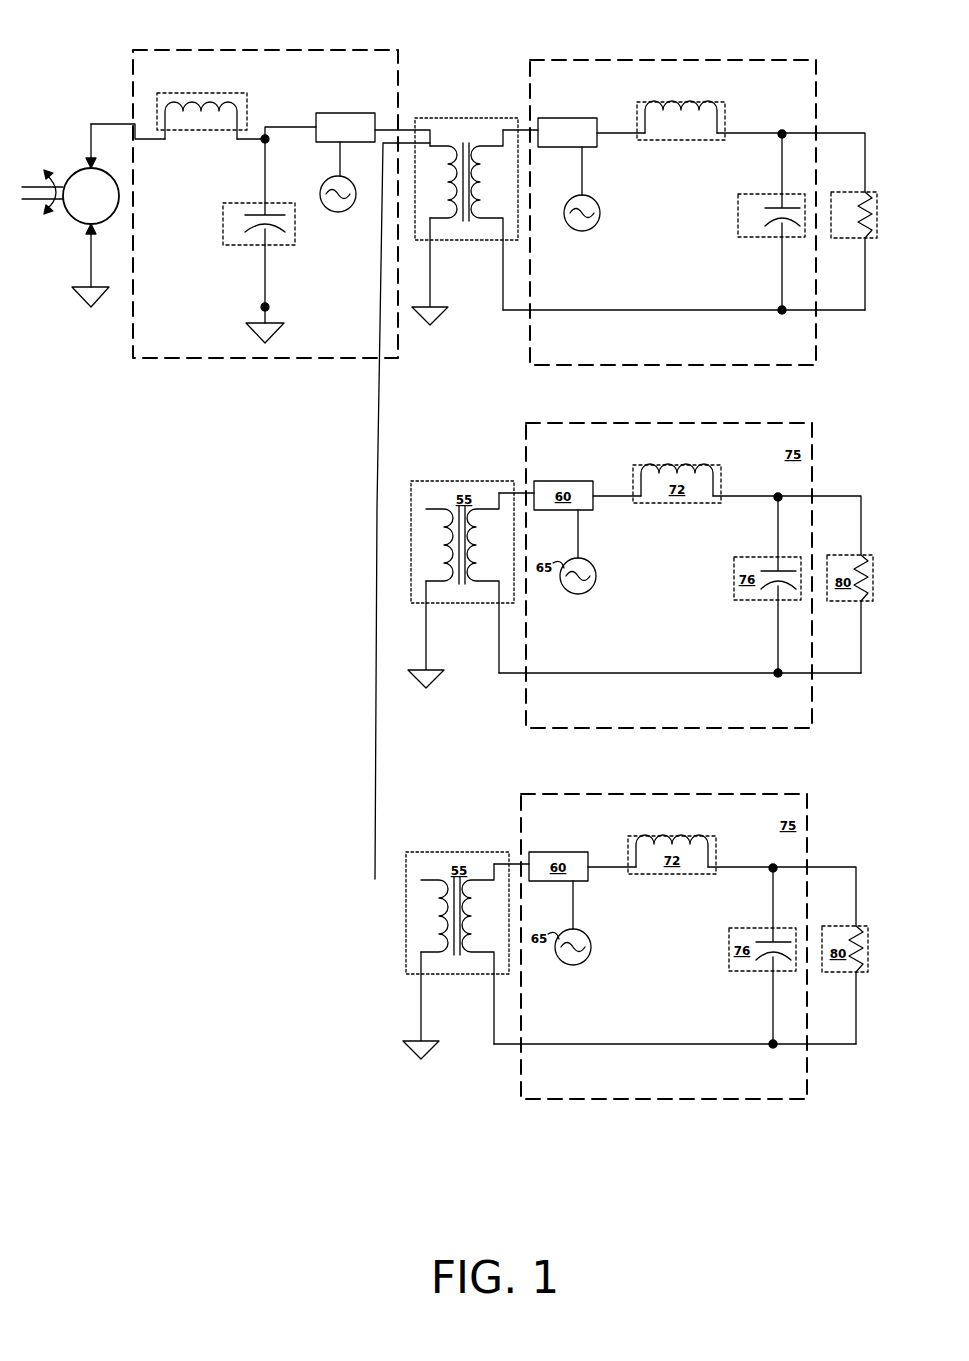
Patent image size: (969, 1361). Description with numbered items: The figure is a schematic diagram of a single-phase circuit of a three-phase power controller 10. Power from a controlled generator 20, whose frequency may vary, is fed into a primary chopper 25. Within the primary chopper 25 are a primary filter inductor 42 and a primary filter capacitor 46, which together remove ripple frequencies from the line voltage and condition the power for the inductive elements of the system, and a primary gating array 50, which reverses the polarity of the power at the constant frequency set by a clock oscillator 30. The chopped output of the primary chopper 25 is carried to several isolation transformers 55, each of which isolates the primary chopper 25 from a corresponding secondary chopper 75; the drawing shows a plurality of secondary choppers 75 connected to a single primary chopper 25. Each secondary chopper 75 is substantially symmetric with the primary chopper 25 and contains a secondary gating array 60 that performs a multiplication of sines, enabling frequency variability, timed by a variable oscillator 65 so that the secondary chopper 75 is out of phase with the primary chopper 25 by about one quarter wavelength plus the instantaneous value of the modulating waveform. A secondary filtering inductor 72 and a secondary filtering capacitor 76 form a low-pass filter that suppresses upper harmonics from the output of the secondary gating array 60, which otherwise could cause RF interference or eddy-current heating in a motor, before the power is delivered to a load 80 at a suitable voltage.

The three-phase controller 10 is at (506, 16).
The controlled generator 20 is at (70, 215).
The primary chopper 25 is at (244, 204).
The clock oscillator 30 is at (326, 184).
The primary filter inductor 42 is at (202, 116).
The primary filter capacitor 46 is at (259, 223).
The primary gating array 50 is at (345, 127).
The isolation transformer 55 is at (466, 214).
The secondary gating array 60 is at (567, 132).
The variable oscillator 65 is at (568, 205).
The secondary filtering inductor 72 is at (681, 120).
The secondary chopper 75 is at (673, 212).
The secondary filtering capacitor 76 is at (771, 222).
The load 80 is at (854, 251).